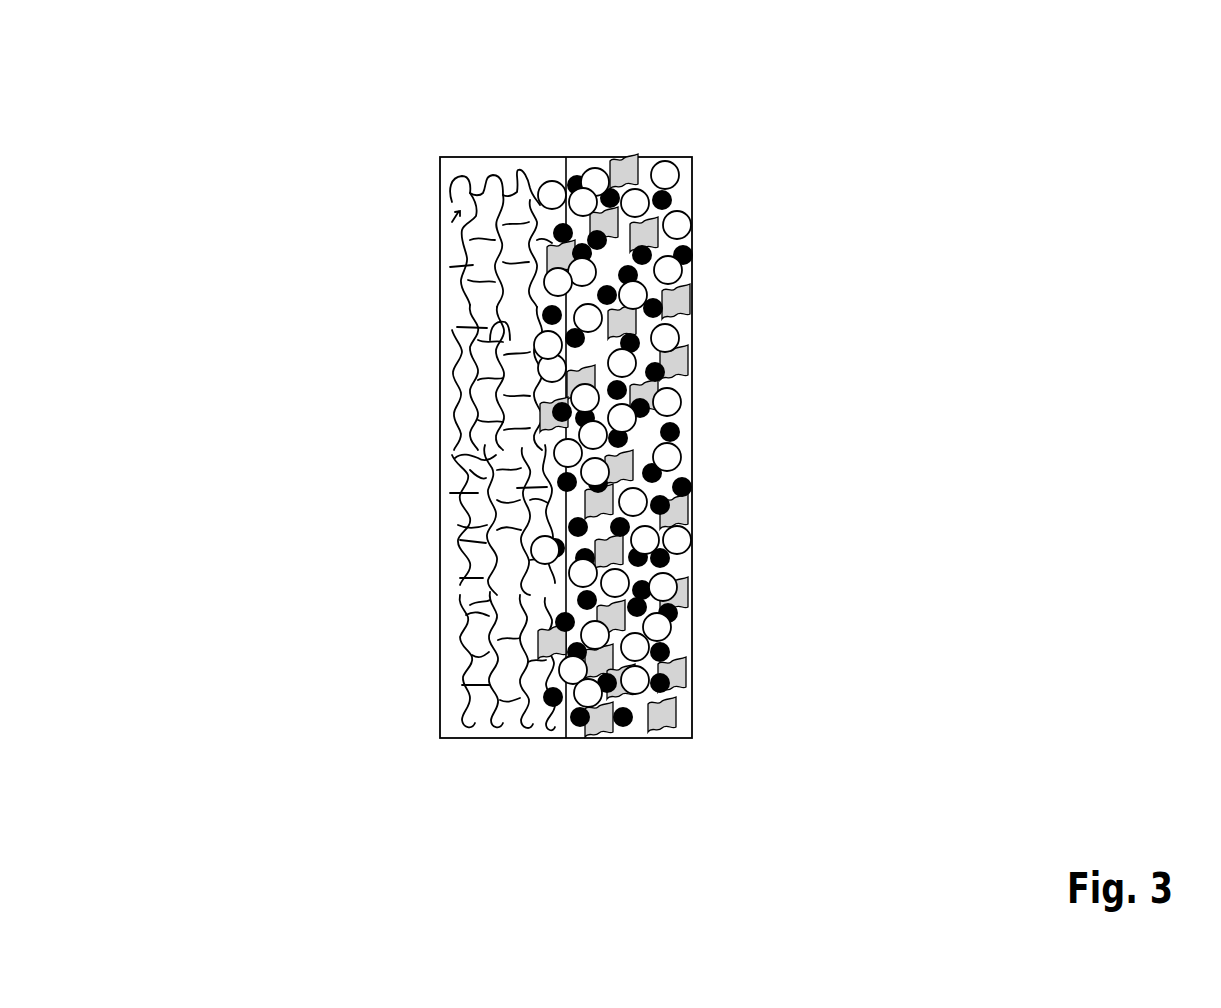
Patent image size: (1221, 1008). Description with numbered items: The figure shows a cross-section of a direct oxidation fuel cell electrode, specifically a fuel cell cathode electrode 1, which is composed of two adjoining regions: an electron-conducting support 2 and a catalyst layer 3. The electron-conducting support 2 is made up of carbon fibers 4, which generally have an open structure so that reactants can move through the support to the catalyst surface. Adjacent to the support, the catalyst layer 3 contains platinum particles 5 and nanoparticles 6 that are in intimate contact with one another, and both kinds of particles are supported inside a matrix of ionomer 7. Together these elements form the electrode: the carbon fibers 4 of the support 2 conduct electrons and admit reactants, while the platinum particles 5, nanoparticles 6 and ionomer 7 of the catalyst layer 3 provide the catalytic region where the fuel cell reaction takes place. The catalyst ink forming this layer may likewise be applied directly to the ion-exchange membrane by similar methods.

The fuel cell cathode electrode 1 is at (440, 738).
The electron-conducting support 2 is at (438, 137).
The catalyst layer 3 is at (693, 137).
The carbon fibers 4 is at (473, 402).
The platinum particles 5 is at (672, 402).
The nanoparticles 6 is at (692, 486).
The ionomer 7 is at (670, 591).